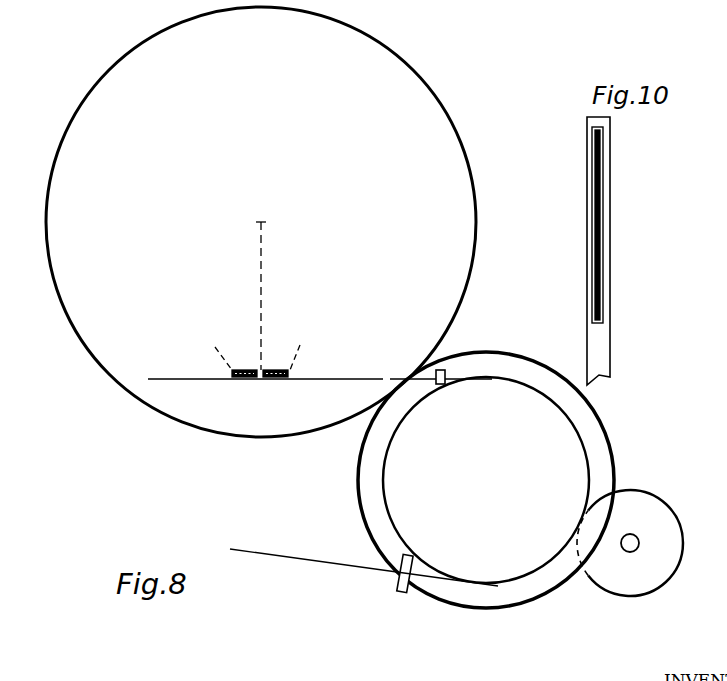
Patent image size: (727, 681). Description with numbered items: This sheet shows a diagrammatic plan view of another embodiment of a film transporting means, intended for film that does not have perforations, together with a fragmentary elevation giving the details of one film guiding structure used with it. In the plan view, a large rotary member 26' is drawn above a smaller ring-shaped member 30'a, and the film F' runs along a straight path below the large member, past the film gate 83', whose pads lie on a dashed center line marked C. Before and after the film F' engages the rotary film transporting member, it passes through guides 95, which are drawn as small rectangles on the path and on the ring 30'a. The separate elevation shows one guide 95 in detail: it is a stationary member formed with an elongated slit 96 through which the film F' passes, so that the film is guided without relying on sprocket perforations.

In FIG. 8, the rotating disc 26' is at (261, 222).
In FIG. 8, the film gate 83' is at (268, 338).
In FIG. 8, the center line C is at (261, 222).
In FIG. 8, the film F' is at (320, 354).
In FIG. 8, the ring member 30'a is at (486, 465).
In FIG. 8, the guide 95 is at (443, 370).
In FIG. 10, the guide 95 is at (589, 192).
In FIG. 10, the elongated slit 96 is at (597, 129).